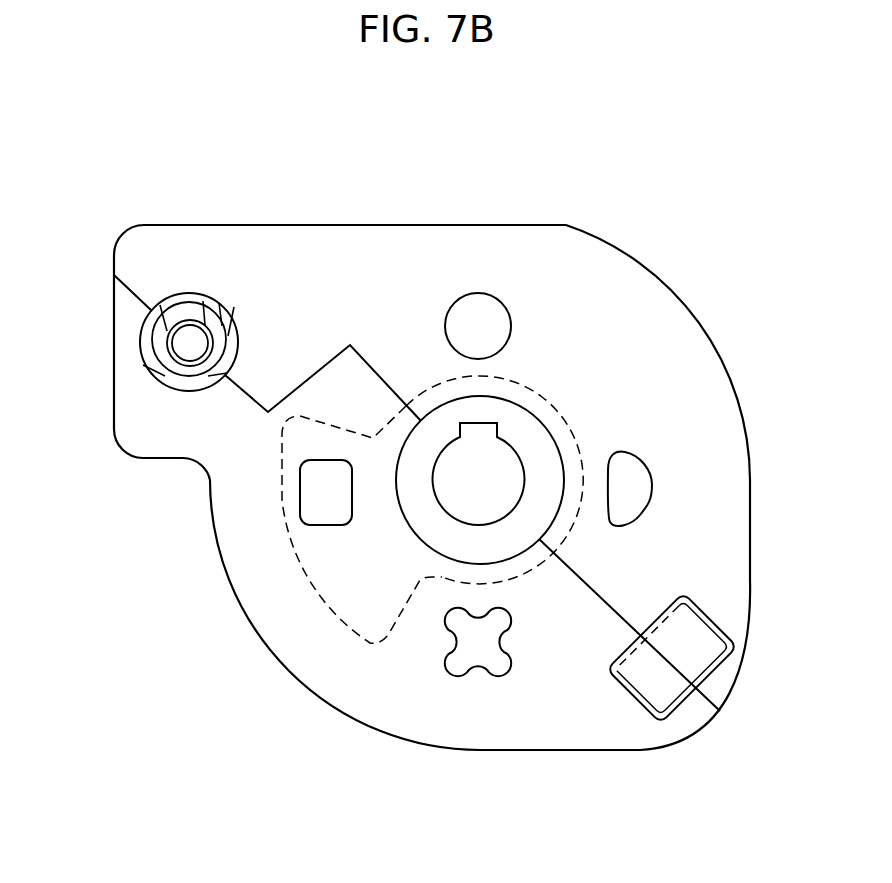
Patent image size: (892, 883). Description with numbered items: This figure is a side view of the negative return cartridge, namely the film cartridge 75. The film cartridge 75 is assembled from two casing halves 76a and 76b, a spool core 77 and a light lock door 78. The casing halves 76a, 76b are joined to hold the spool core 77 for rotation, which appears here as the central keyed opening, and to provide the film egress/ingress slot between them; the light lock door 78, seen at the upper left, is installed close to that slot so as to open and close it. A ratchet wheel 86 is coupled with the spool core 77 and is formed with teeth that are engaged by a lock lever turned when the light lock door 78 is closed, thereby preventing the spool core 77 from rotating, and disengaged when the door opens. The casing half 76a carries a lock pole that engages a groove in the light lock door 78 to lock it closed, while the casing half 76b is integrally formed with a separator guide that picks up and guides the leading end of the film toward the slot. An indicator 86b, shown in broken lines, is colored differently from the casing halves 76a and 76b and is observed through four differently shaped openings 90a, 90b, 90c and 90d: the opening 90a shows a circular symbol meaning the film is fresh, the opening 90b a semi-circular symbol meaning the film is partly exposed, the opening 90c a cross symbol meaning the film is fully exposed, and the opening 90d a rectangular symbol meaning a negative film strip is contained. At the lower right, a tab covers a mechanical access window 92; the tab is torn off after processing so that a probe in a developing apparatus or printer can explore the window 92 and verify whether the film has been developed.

The film cartridge 75 is at (432, 489).
The casing half 76a is at (557, 232).
The casing half 76b is at (375, 717).
The spool core 77 is at (517, 427).
The light lock door 78 is at (232, 317).
The ratchet wheel 86 is at (388, 637).
The indicator 86b is at (320, 577).
The opening 90a is at (497, 300).
The opening 90b is at (638, 468).
The opening 90c is at (503, 648).
The opening 90d is at (325, 520).
The mechanical access window 92 is at (711, 658).